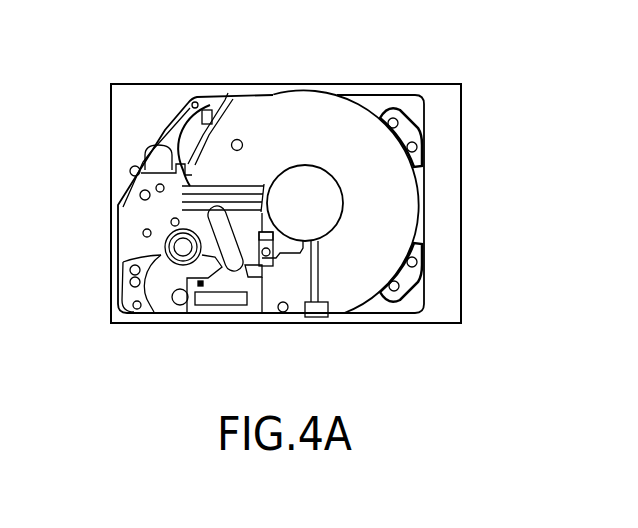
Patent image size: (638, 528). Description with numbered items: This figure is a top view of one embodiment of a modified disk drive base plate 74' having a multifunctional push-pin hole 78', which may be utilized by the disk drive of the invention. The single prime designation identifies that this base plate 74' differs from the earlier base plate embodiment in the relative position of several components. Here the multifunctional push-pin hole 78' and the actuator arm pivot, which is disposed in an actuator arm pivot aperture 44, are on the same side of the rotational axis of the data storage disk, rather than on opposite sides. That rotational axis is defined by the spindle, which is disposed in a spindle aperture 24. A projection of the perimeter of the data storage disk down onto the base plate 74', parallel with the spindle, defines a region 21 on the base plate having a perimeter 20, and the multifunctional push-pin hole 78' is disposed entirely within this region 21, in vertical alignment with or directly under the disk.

The perimeter 20 is at (410, 200).
The region 21 is at (326, 127).
The spindle aperture 24 is at (276, 172).
The actuator arm pivot aperture 44 is at (173, 255).
The base plate 74' is at (316, 170).
The multifunctional push-pin hole 78' is at (227, 161).